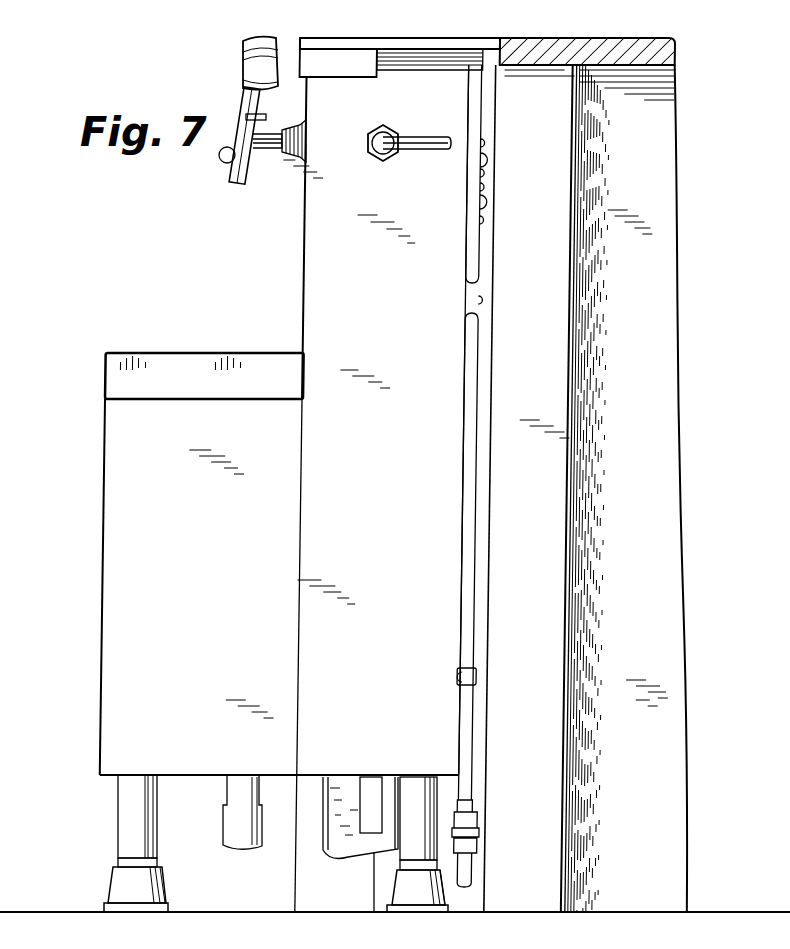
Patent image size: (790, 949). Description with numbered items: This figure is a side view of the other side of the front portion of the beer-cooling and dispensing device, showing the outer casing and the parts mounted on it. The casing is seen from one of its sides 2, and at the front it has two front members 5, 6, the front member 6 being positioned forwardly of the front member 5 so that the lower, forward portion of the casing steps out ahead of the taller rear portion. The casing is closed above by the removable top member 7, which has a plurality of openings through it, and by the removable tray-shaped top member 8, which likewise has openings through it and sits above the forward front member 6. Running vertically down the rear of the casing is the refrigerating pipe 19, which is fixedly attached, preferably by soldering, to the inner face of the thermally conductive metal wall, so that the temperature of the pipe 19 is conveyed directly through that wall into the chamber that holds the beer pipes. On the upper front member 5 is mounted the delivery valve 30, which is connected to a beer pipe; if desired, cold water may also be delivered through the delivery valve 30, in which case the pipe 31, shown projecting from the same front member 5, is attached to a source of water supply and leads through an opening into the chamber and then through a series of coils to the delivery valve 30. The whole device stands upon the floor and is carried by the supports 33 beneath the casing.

The side 2 is at (110, 640).
The front member 5 is at (300, 262).
The front member 6 is at (104, 552).
The removable top member 7 is at (437, 38).
The removable tray-shaped top member 8 is at (218, 353).
The refrigerating pipe 19 is at (472, 237).
The delivery valve 30 is at (243, 152).
The pipe 31 is at (432, 147).
The support 33 is at (125, 813).